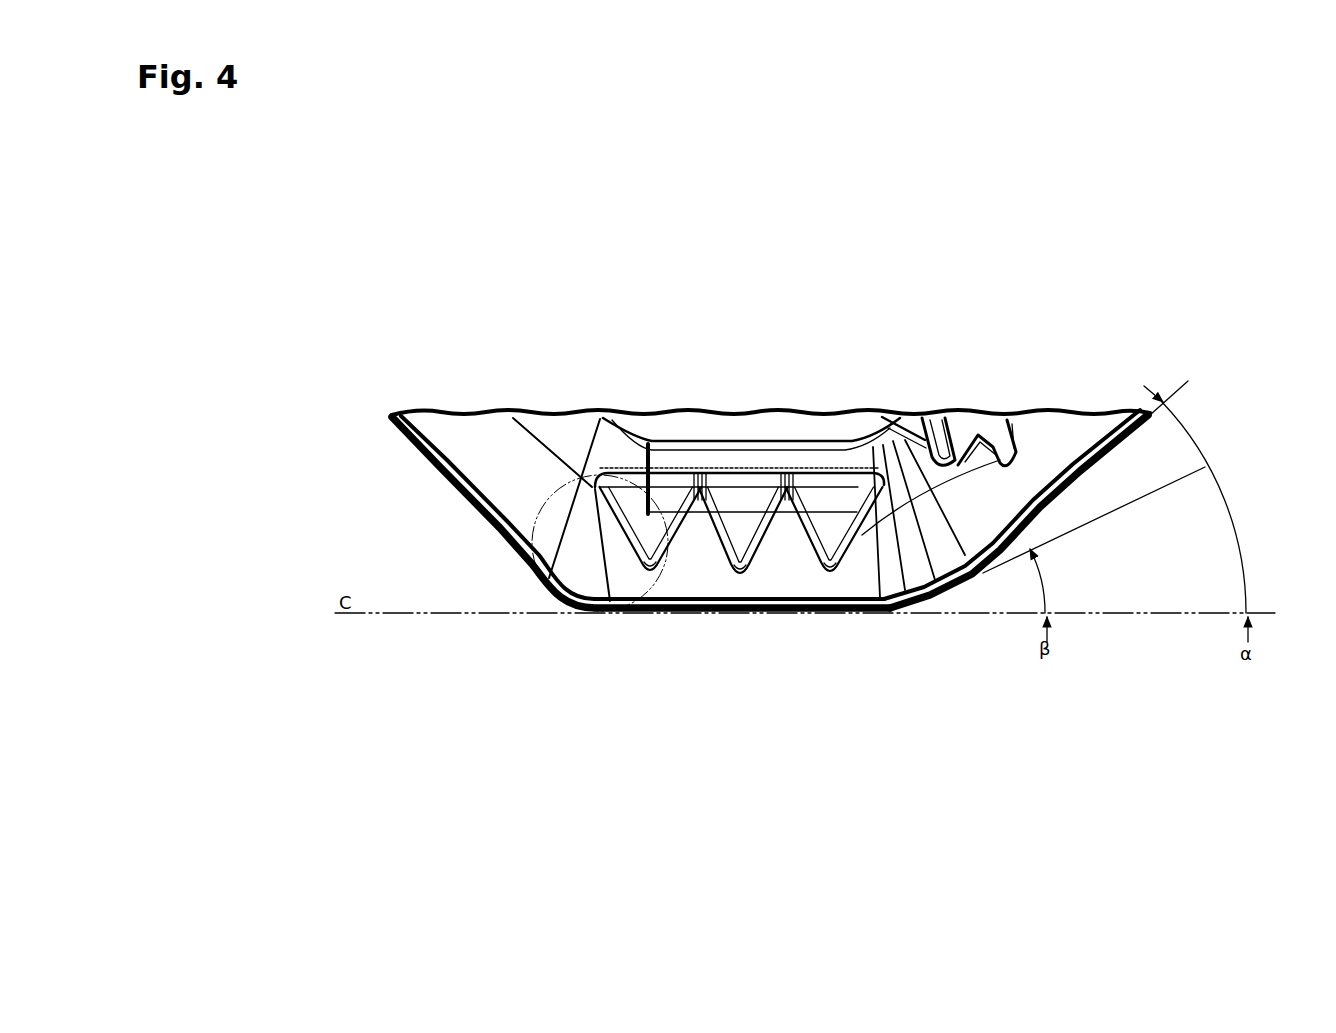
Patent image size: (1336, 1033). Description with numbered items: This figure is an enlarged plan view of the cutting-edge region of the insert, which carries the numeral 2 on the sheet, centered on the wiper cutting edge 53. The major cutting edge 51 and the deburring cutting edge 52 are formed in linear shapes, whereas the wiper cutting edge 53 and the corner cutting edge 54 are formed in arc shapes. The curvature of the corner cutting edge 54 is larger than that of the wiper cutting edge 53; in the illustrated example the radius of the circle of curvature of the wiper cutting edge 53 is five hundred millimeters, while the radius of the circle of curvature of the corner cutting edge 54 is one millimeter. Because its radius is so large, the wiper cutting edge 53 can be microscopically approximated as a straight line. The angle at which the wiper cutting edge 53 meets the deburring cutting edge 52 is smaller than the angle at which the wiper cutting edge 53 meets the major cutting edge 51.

The tray 2 is at (772, 839).
The major cutting edge 51 is at (1070, 473).
The deburring cutting edge 52 is at (920, 590).
The wiper cutting edge 53 is at (797, 608).
The corner cutting edge 54 is at (572, 602).